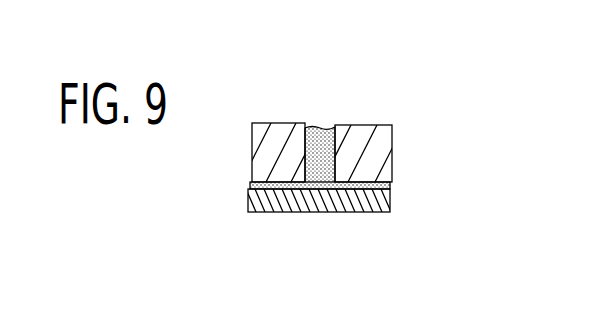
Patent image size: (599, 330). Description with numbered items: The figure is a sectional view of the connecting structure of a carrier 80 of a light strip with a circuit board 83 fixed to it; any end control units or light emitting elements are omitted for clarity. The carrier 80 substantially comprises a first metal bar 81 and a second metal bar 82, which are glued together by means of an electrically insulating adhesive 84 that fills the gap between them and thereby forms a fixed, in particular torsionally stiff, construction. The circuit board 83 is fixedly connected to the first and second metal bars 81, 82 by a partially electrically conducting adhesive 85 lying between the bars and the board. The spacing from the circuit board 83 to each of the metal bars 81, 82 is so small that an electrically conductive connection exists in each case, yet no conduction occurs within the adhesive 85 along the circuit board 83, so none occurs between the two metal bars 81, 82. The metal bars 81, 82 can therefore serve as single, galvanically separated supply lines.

The carrier 80 is at (403, 103).
The first metal bar 81 is at (268, 123).
The second metal bar 82 is at (386, 157).
The circuit board 83 is at (358, 203).
The electrically insulating adhesive 84 is at (320, 95).
The partially electrically conducting adhesive 85 is at (232, 184).